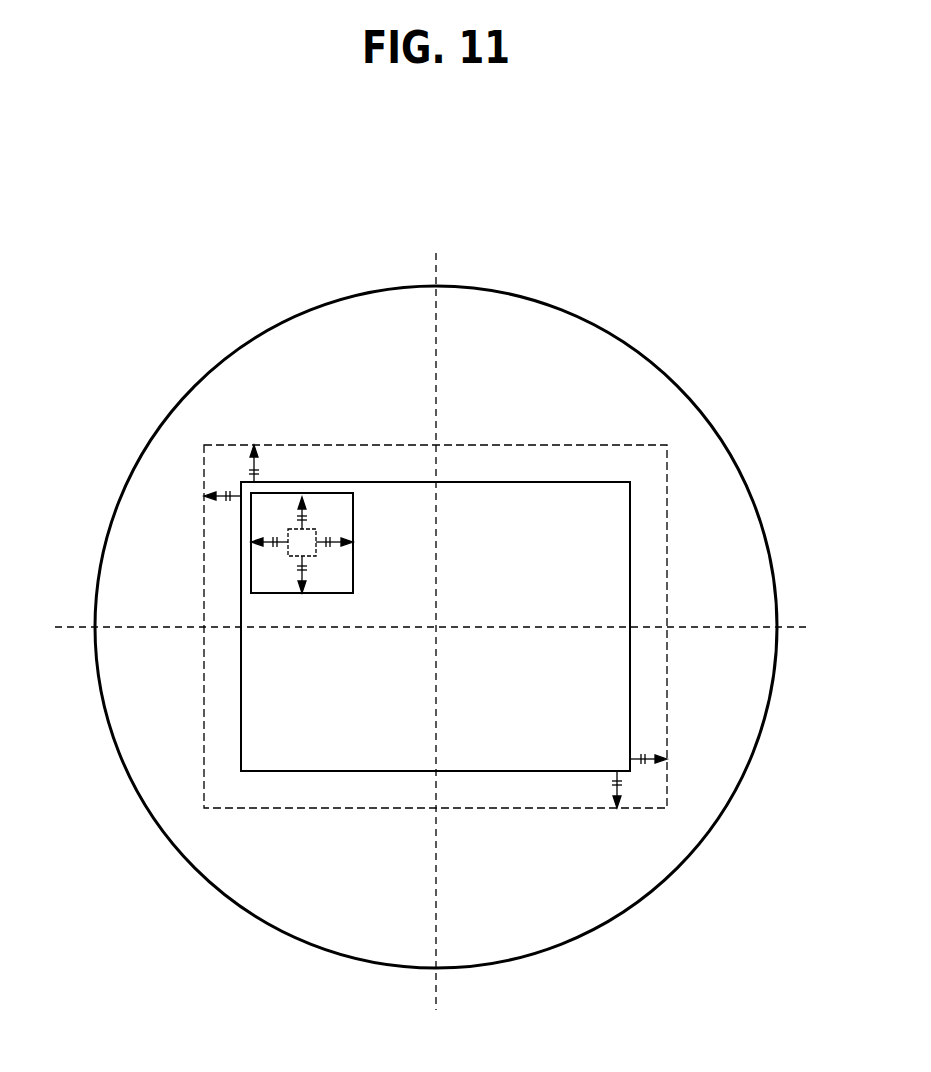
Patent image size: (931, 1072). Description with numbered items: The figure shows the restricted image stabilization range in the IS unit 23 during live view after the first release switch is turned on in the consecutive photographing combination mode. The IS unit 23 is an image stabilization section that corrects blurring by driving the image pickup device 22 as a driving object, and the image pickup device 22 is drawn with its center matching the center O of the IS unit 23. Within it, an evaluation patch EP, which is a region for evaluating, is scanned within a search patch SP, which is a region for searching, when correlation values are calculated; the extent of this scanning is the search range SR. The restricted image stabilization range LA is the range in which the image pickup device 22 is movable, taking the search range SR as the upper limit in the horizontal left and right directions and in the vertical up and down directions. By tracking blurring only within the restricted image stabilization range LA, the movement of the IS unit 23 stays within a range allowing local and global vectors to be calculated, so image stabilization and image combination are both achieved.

The IS unit 23 is at (558, 303).
The image pickup device 22 is at (240, 756).
The restricted image stabilization range LA is at (587, 445).
The search patch SP is at (353, 507).
The evaluation patch EP is at (315, 530).
The search range SR is at (335, 543).
The center of the IS unit O is at (432, 631).